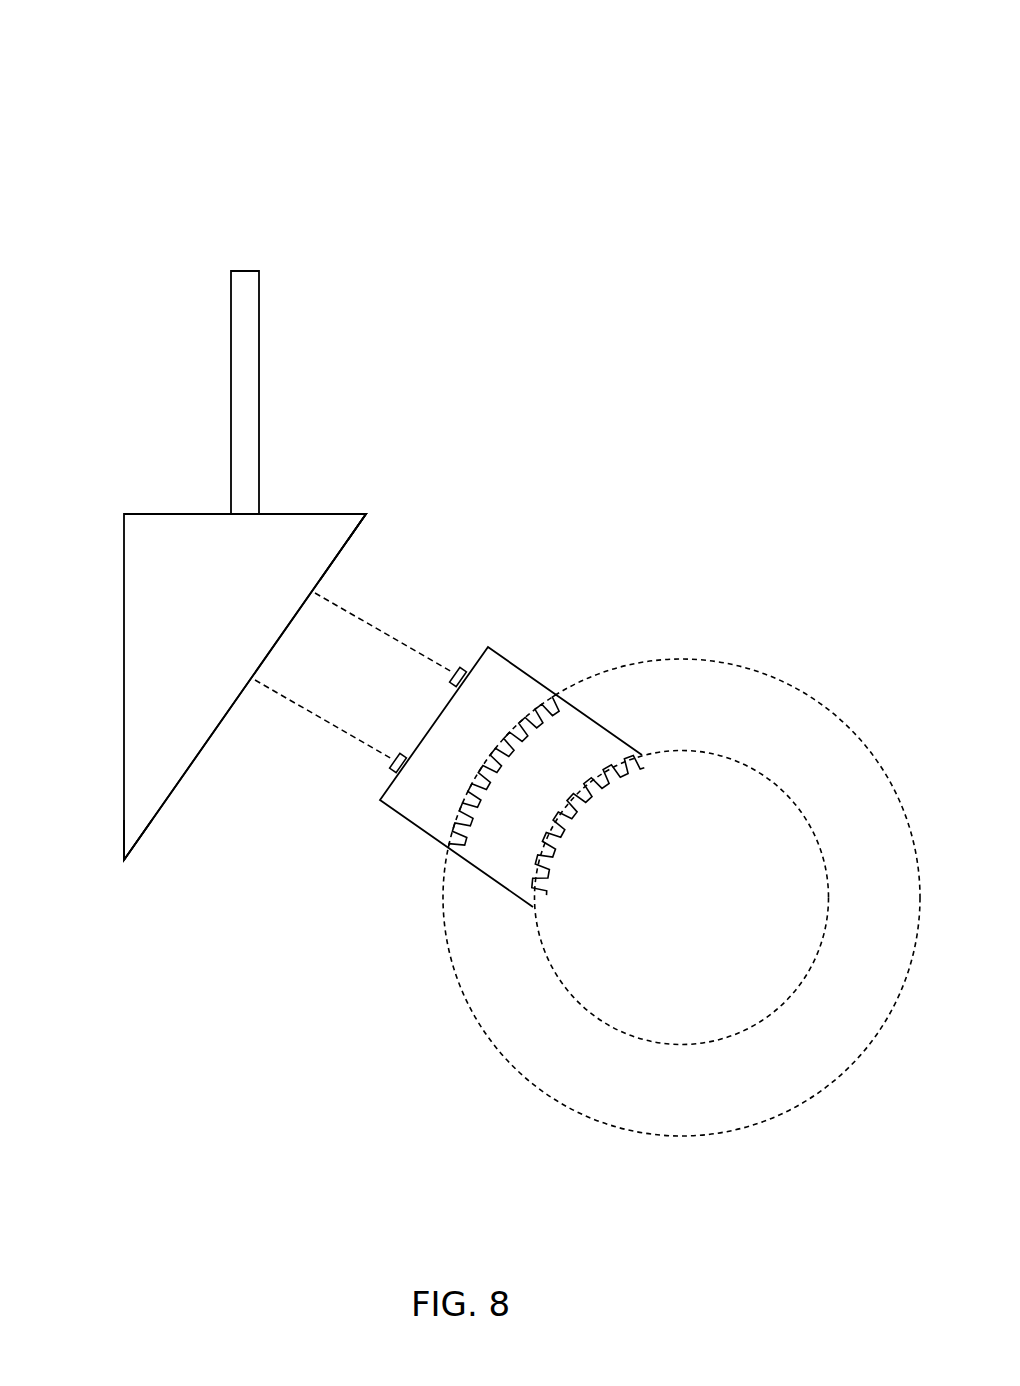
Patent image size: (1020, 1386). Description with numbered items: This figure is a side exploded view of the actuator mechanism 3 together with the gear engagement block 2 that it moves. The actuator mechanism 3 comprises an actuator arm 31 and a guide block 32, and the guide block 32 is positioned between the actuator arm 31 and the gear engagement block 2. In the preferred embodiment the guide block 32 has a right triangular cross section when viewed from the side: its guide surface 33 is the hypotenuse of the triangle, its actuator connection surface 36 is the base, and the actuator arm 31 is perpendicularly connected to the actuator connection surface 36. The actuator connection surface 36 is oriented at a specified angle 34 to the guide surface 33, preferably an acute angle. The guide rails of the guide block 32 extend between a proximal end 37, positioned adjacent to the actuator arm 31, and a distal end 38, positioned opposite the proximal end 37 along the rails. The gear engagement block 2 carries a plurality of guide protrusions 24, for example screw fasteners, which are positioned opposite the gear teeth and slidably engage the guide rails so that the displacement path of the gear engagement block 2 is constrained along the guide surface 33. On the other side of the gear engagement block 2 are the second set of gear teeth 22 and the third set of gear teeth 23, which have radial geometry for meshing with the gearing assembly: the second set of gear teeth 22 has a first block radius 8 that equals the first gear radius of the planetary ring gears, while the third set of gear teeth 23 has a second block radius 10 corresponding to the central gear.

The gear engagement block 2 is at (543, 590).
The actuator mechanism 3 is at (314, 100).
The first block radius 8 is at (713, 658).
The second block radius 10 is at (762, 770).
The second set of gear teeth 22 is at (492, 784).
The third set of gear teeth 23 is at (583, 822).
The guide protrusions 24 is at (450, 680).
The actuator arm 31 is at (248, 377).
The guide block 32 is at (209, 636).
The guide surface 33 is at (203, 772).
The specified angle 34 is at (330, 555).
The actuator connection surface 36 is at (185, 512).
The proximal end 37 is at (383, 516).
The distal end 38 is at (99, 859).